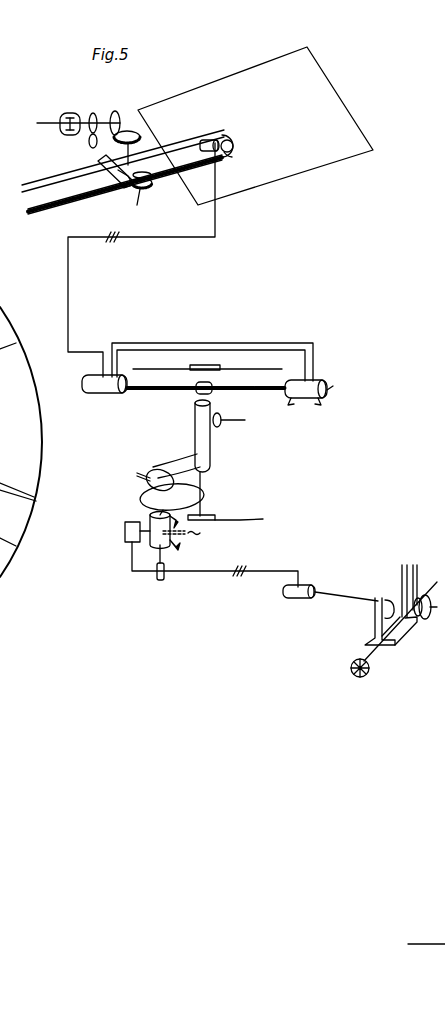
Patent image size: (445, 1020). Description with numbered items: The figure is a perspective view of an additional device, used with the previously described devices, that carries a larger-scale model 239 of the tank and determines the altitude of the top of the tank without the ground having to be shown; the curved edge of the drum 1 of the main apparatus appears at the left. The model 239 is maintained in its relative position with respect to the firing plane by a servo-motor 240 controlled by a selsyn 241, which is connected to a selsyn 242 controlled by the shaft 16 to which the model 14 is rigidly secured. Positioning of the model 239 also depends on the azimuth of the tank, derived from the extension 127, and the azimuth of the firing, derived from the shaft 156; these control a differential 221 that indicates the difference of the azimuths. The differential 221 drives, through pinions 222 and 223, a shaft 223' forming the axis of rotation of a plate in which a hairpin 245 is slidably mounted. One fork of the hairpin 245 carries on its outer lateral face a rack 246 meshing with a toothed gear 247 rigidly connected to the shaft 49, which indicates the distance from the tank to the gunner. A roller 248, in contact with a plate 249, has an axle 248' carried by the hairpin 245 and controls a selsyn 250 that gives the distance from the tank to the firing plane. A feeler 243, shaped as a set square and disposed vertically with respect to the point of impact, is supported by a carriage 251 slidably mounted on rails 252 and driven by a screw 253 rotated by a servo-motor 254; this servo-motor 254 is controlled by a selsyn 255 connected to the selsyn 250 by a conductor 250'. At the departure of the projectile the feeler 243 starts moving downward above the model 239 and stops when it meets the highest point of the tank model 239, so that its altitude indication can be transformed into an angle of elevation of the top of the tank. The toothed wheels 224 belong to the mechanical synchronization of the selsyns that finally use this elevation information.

The drum 1 is at (40, 441).
The model 14 is at (389, 600).
The shaft 16 is at (356, 598).
The shaft 49 is at (137, 205).
The extension 127 is at (38, 124).
The shaft 156 is at (89, 143).
The differential 221 is at (76, 113).
The pinion 222 is at (120, 113).
The pinion 223 is at (151, 135).
The shaft 223' is at (89, 199).
The toothed wheels 224 is at (115, 189).
The model of the tank 239 is at (200, 497).
The servo-motor 240 is at (173, 541).
The selsyn 241 is at (161, 581).
The selsyn 242 is at (295, 599).
The feeler 243 is at (206, 442).
The hairpin 245 is at (50, 178).
The rack 246 is at (176, 166).
The toothed gear 247 is at (145, 189).
The roller 248 is at (250, 139).
The axle 248' is at (248, 162).
The plate 249 is at (326, 93).
The selsyn 250 is at (225, 127).
The conductor 250' is at (141, 260).
The carriage 251 is at (201, 396).
The rails 252 is at (262, 368).
The screw 253 is at (262, 389).
The servo-motor 254 is at (310, 388).
The selsyn 255 is at (102, 394).